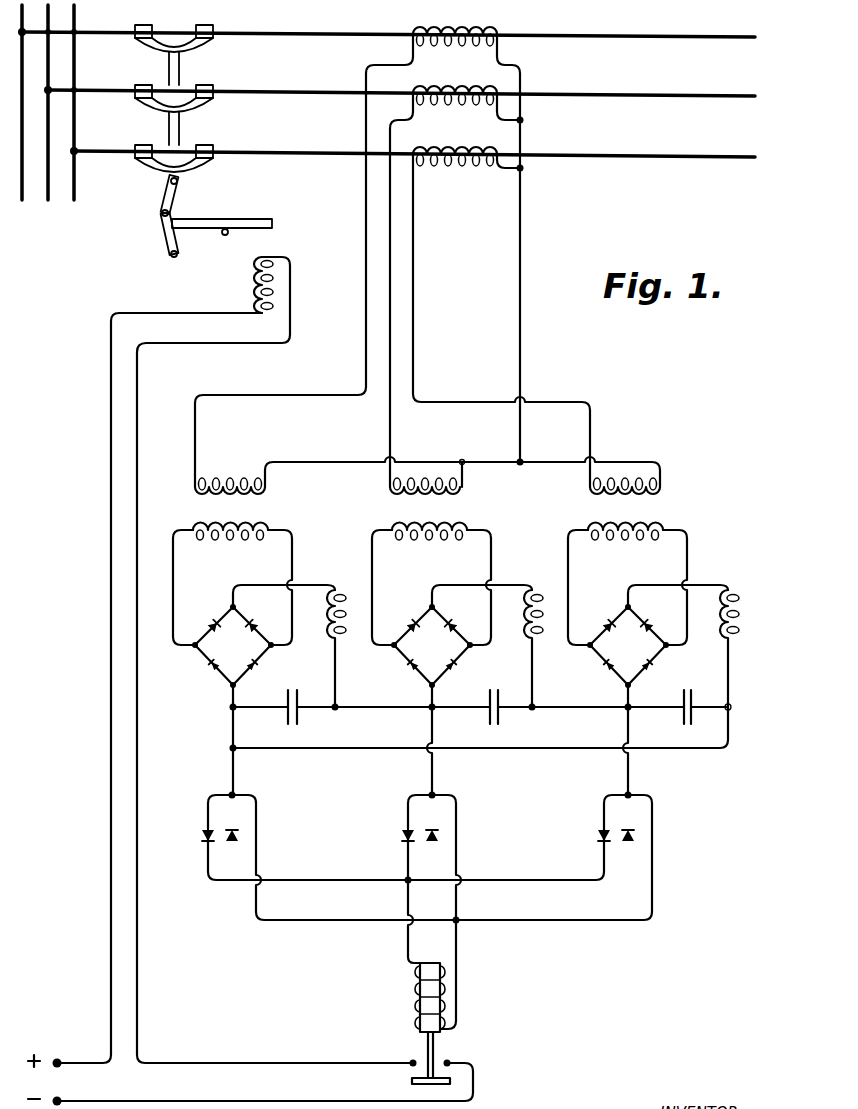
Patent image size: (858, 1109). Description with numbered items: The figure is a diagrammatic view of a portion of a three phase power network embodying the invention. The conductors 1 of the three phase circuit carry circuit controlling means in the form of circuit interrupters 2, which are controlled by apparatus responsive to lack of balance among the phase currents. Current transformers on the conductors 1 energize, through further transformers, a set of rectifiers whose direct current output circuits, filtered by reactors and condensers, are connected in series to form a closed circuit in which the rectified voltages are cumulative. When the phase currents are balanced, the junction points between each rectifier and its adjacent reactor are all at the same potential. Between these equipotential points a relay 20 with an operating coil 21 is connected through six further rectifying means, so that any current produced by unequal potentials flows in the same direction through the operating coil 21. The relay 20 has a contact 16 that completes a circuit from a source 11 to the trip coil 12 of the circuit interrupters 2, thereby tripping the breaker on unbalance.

The conductors 1 is at (650, 40).
The circuit interrupters 2 is at (203, 141).
The source 11 is at (45, 1064).
The trip coil 12 is at (252, 268).
The contact 16 is at (442, 1062).
The relay 20 is at (398, 997).
The operating coil 21 is at (412, 1022).